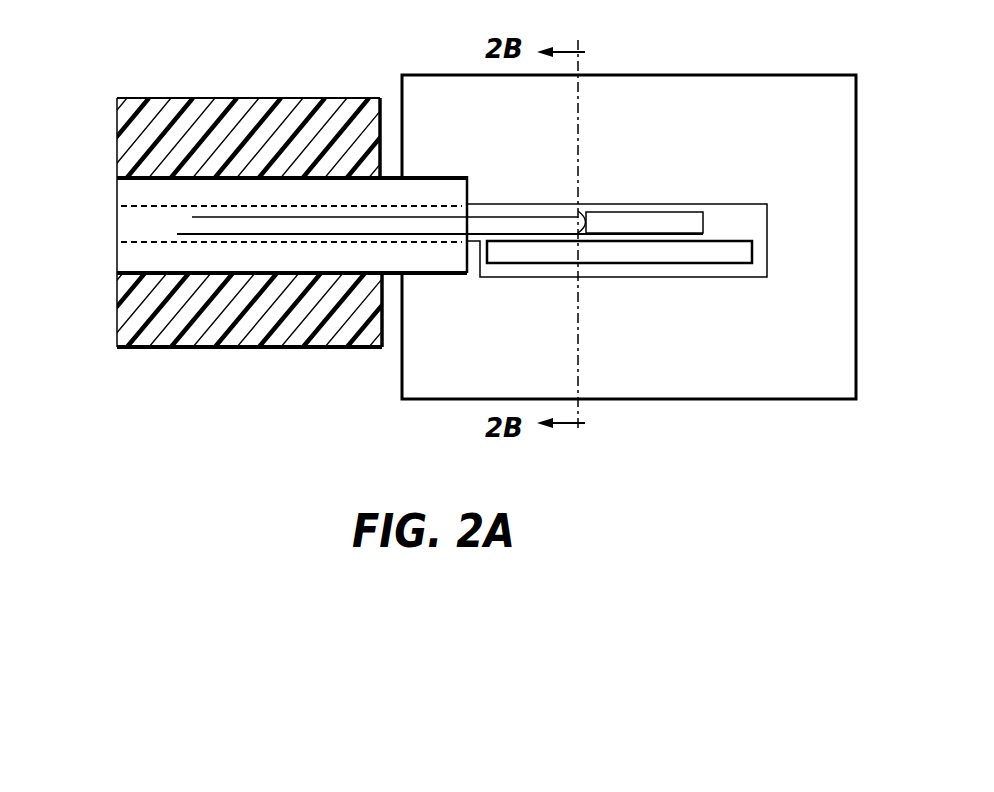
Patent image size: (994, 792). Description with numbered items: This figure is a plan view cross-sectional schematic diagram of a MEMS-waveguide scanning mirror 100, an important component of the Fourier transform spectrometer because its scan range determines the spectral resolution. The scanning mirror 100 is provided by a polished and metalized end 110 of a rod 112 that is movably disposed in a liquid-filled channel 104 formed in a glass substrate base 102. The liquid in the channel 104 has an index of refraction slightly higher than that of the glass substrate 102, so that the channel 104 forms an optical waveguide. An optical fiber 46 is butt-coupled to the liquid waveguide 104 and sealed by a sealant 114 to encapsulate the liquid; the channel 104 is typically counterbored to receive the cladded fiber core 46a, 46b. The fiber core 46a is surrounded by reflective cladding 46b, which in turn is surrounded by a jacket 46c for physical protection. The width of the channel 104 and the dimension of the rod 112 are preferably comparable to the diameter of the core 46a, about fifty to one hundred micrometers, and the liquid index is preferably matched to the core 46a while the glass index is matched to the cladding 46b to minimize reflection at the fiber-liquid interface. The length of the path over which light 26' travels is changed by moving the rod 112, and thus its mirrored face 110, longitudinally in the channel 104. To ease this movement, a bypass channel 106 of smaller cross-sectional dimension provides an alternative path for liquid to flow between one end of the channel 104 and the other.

The optical fiber 46 is at (247, 180).
The core 46a is at (130, 227).
The cladding 46b is at (118, 192).
The jacket 46c is at (117, 142).
The light 26' is at (440, 257).
The scanning mirror 100 is at (721, 68).
The glass substrate base 102 is at (553, 370).
The liquid-filled channel 104 is at (548, 228).
The bypass channel 106 is at (737, 270).
The polished and metalized end 110 is at (585, 205).
The rod 112 is at (700, 205).
The sealant 114 is at (391, 288).